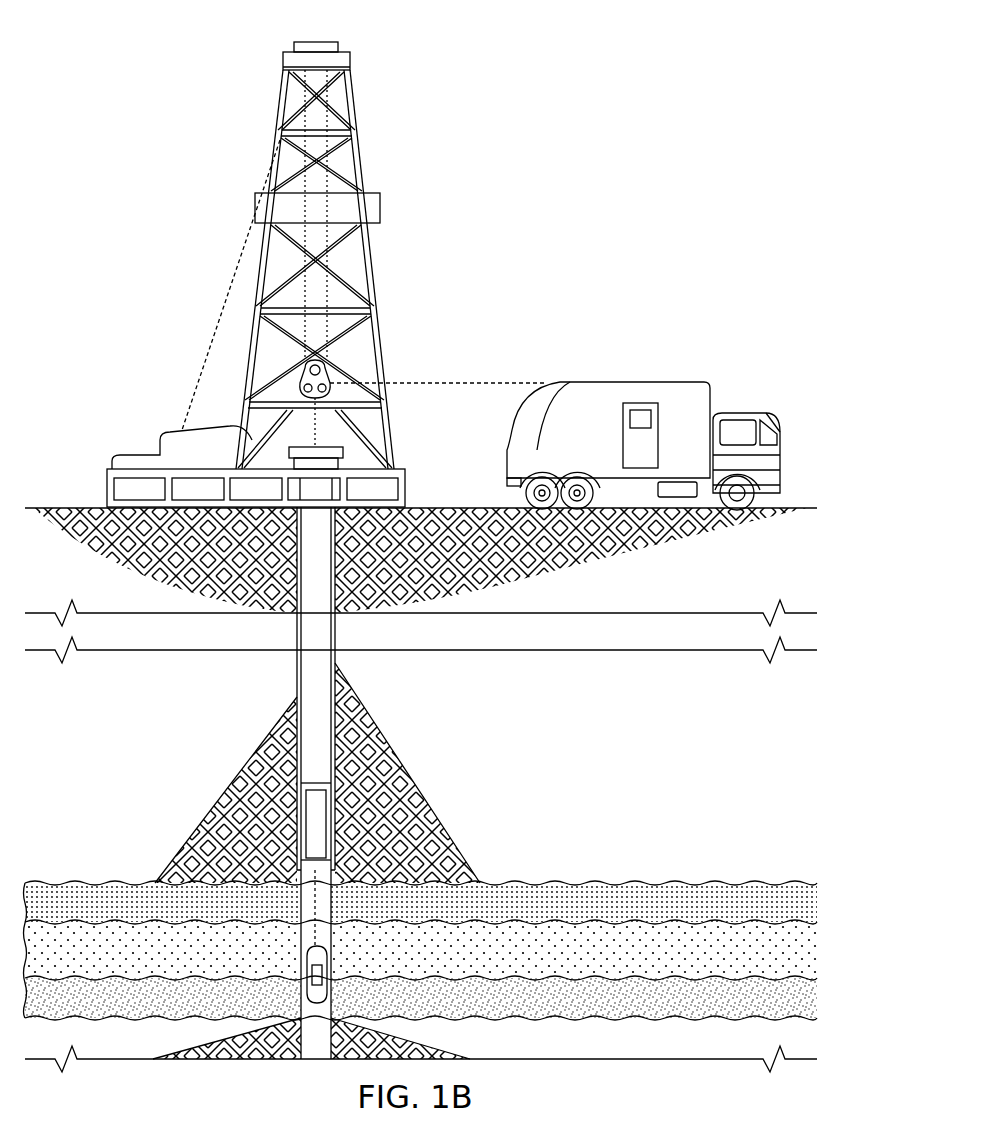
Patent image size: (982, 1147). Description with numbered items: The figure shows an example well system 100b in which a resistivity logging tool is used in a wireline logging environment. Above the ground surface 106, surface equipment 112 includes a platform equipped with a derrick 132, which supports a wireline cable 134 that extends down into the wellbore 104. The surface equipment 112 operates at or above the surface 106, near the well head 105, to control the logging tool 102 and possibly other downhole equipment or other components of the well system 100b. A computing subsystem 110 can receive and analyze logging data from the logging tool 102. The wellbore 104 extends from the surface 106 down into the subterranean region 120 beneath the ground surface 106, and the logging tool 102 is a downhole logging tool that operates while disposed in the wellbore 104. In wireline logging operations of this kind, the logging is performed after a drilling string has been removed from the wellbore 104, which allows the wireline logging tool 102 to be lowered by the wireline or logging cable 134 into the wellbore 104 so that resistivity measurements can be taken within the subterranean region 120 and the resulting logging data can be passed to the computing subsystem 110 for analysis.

The well system 100b is at (168, 79).
The derrick 132 is at (368, 172).
The surface equipment 112 is at (514, 269).
The computing subsystem 110 is at (641, 404).
The wireline cable 134 is at (310, 433).
The well head 105 is at (345, 448).
The ground surface 106 is at (455, 507).
The wellbore 104 is at (296, 668).
The subterranean region 120 is at (513, 753).
The logging tool 102 is at (306, 966).